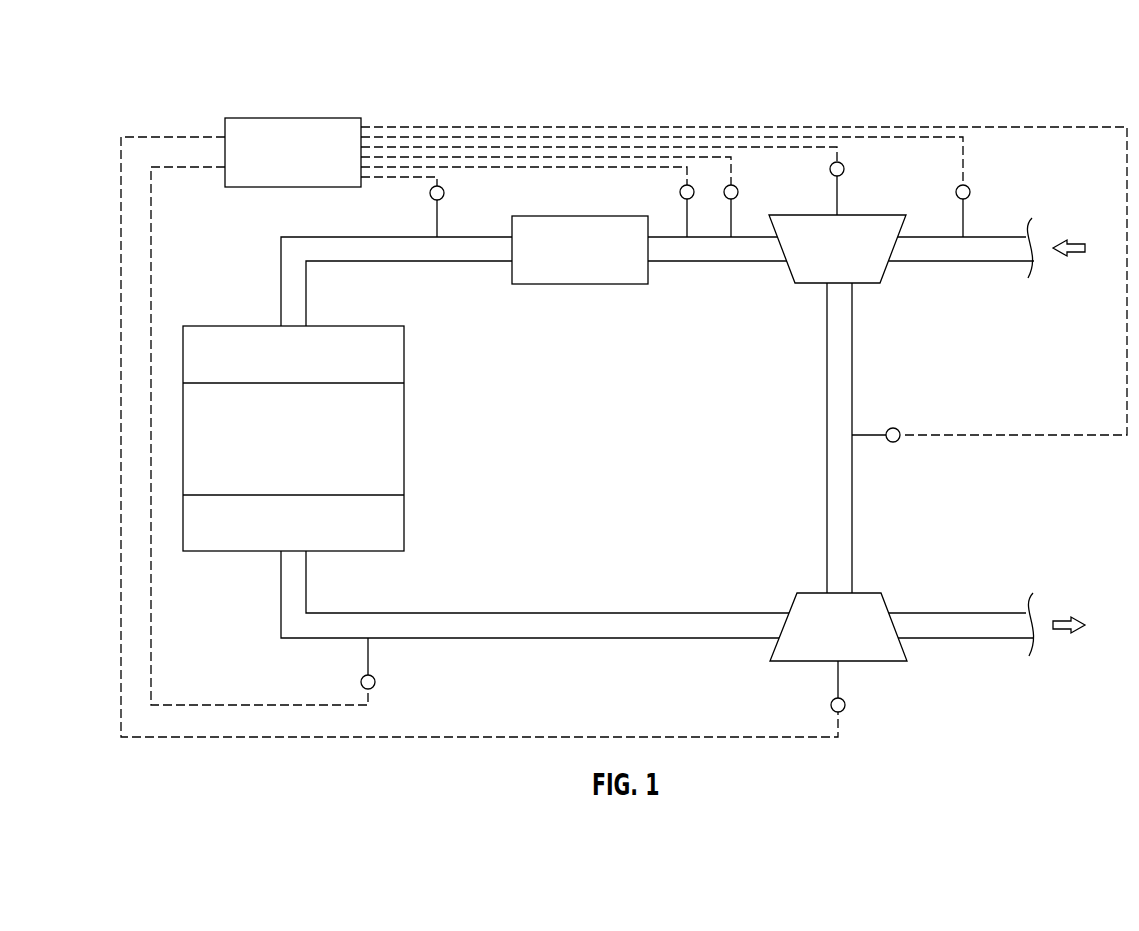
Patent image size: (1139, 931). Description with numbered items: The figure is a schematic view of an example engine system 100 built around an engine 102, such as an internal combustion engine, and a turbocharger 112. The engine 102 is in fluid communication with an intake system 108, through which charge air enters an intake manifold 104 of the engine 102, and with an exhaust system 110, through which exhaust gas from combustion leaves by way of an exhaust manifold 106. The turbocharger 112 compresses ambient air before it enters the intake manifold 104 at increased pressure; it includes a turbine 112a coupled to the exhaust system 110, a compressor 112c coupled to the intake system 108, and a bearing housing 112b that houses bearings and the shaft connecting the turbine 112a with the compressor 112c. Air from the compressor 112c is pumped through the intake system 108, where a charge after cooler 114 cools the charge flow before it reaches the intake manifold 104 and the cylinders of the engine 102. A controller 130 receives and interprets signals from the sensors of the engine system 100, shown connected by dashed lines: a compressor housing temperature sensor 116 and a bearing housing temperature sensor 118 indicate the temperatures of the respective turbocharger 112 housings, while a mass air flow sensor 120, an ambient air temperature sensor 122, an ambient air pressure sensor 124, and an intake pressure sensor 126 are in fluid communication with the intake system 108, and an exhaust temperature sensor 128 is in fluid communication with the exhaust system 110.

The engine system 100 is at (186, 71).
The engine 102 is at (382, 450).
The intake manifold 104 is at (248, 337).
The exhaust manifold 106 is at (250, 542).
The intake system 108 is at (489, 205).
The exhaust system 110 is at (585, 664).
The turbocharger 112 is at (841, 422).
The turbine 112a is at (860, 591).
The bearing housing 112b is at (827, 437).
The compressor 112c is at (860, 213).
The charge after cooler 114 is at (568, 285).
The compressor housing temperature sensor 116 is at (844, 167).
The bearing housing temperature sensor 118 is at (893, 428).
The mass air flow sensor 120 is at (971, 191).
The ambient air temperature sensor 122 is at (738, 190).
The ambient air pressure sensor 124 is at (680, 190).
The intake pressure sensor 126 is at (431, 198).
The exhaust temperature sensor 128 is at (361, 679).
The controller 130 is at (282, 118).